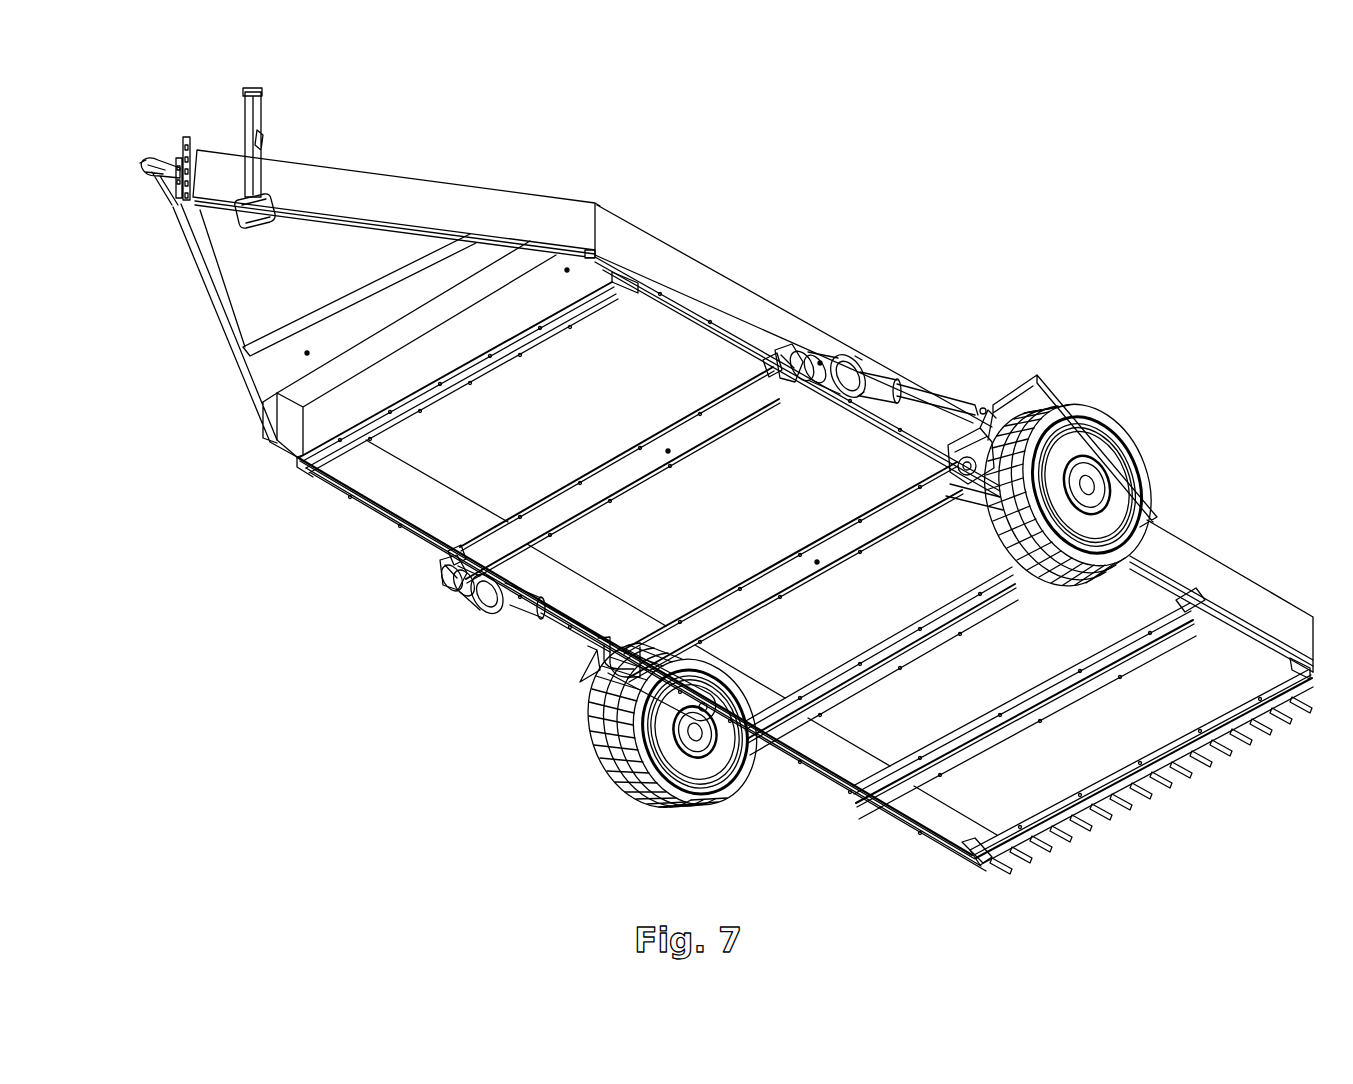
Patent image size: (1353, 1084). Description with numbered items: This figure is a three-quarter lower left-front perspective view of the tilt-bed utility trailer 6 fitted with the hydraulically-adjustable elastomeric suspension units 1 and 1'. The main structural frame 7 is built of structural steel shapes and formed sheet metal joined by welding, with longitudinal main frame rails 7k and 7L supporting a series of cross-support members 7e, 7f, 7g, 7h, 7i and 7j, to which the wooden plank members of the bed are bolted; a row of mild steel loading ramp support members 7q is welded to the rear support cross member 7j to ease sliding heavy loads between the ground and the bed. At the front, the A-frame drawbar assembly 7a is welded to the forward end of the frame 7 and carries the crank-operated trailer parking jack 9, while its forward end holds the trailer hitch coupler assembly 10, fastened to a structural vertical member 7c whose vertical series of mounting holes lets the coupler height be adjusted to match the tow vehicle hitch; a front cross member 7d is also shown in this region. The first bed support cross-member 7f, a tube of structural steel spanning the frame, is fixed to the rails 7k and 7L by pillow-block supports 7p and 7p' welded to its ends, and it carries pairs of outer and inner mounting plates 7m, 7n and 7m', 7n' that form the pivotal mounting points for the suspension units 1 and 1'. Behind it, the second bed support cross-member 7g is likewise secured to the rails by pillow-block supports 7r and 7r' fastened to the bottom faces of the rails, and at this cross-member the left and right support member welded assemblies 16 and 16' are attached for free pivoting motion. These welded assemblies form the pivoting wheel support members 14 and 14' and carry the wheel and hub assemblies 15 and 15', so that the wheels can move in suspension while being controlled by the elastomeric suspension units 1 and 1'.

The hydraulically-adjustable elastomeric suspension unit 1 is at (930, 359).
The hydraulically-adjustable elastomeric suspension unit 1' is at (542, 640).
The tilt-bed utility trailer 6 is at (1015, 197).
The main structural frame 7 is at (1228, 548).
The drawbar assembly 7a is at (445, 178).
The structural vertical member 7c is at (183, 137).
The front cross member 7d is at (307, 353).
The frame cross-support member 7e is at (567, 270).
The first bed support cross-member 7f is at (668, 451).
The second bed support cross-member 7g is at (817, 562).
The frame cross-support member 7h is at (917, 622).
The frame cross-support member 7i is at (983, 713).
The rear support cross member 7j is at (1180, 730).
The main frame rail 7k is at (933, 833).
The main frame rail 7L is at (1260, 580).
The outer mounting plate 7m is at (828, 336).
The outer mounting plate 7m' is at (422, 590).
The inner mounting plate 7n is at (774, 317).
The inner mounting plate 7n' is at (409, 560).
The pillow-block support 7p is at (736, 370).
The pillow-block support 7p' is at (487, 511).
The loading ramp support member 7q is at (1245, 733).
The pillow-block support 7r is at (932, 447).
The pillow-block support 7r' is at (641, 618).
The trailer parking jack 9 is at (283, 87).
The trailer hitch coupler assembly 10 is at (140, 197).
The pivoting wheel support member 14 is at (1114, 451).
The pivoting wheel support member 14' is at (707, 747).
The wheel and hub assembly 15 is at (1079, 516).
The wheel and hub assembly 15' is at (646, 736).
The left support member welded assembly 16 is at (961, 519).
The right support member welded assembly 16' is at (708, 684).